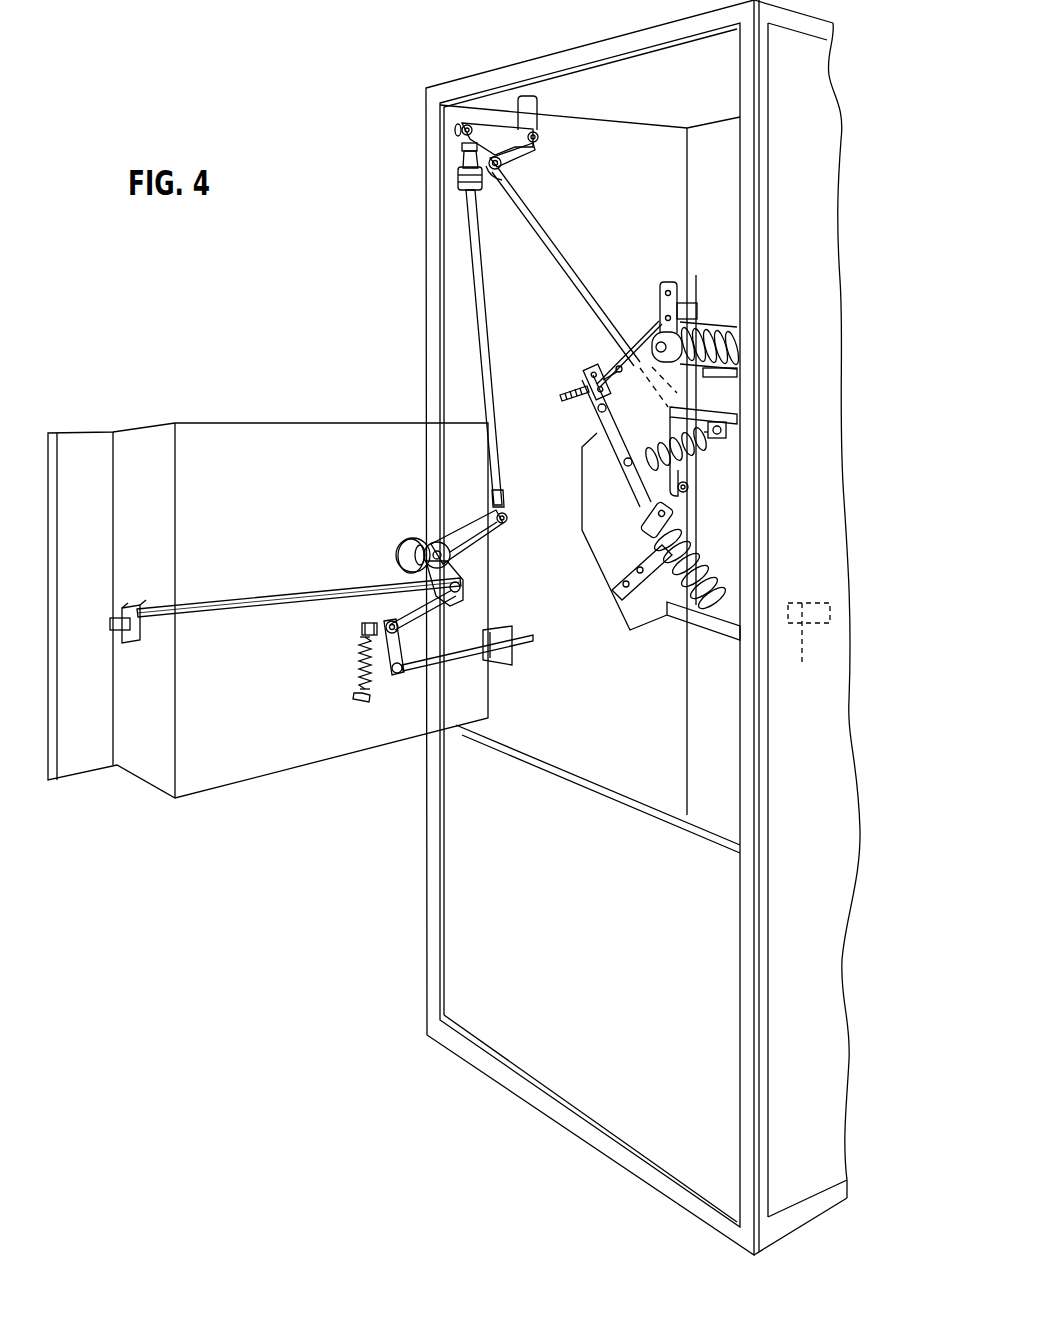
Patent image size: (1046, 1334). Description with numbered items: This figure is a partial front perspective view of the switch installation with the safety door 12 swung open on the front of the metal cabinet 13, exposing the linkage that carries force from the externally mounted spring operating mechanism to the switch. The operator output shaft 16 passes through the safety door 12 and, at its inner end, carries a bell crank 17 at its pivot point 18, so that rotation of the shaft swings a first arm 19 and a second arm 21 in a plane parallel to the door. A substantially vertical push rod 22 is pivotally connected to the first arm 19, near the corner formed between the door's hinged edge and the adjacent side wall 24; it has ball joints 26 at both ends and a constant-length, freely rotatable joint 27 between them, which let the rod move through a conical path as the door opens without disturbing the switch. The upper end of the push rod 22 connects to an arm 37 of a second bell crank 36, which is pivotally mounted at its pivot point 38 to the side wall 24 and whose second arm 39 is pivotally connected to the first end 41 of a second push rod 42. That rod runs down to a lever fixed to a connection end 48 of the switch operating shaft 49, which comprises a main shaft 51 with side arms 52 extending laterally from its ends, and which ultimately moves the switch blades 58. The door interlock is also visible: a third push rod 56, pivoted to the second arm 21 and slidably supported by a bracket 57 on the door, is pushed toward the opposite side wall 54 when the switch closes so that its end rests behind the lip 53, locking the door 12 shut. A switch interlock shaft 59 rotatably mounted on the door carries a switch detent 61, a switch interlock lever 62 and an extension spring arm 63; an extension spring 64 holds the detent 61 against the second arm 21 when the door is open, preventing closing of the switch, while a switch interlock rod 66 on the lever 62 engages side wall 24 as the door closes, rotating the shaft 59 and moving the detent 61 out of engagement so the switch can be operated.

The safety door 12 is at (240, 414).
The metal cabinet 13 is at (585, 40).
The operator output shaft 16 is at (400, 542).
The bell crank 17 is at (438, 508).
The pivot point 18 is at (410, 534).
The first arm 19 is at (478, 524).
The second arm 21 is at (463, 597).
The push rod 22 is at (466, 310).
The side wall 24 is at (537, 713).
The ball joints 26 is at (462, 128).
The freely rotatable joint 27 is at (457, 178).
The second bell crank 36 is at (552, 157).
The arm 37 is at (490, 125).
The pivot point 38 is at (539, 137).
The second arm 39 is at (512, 157).
The first end 41 is at (488, 175).
The second push rod 42 is at (575, 258).
The connection end 48 is at (687, 491).
The switch operating shaft 49 is at (730, 405).
The main shaft 51 is at (735, 430).
The side arms 52 is at (680, 470).
The lip 53 is at (809, 651).
The side wall 54 is at (810, 752).
The third push rod 56 is at (256, 585).
The bracket 57 is at (142, 608).
The switch blades 58 is at (598, 368).
The switch interlock shaft 59 is at (386, 620).
The switch detent 61 is at (418, 610).
The switch interlock lever 62 is at (393, 652).
The extension spring arm 63 is at (361, 630).
The extension spring 64 is at (360, 668).
The switch interlock rod 66 is at (530, 645).